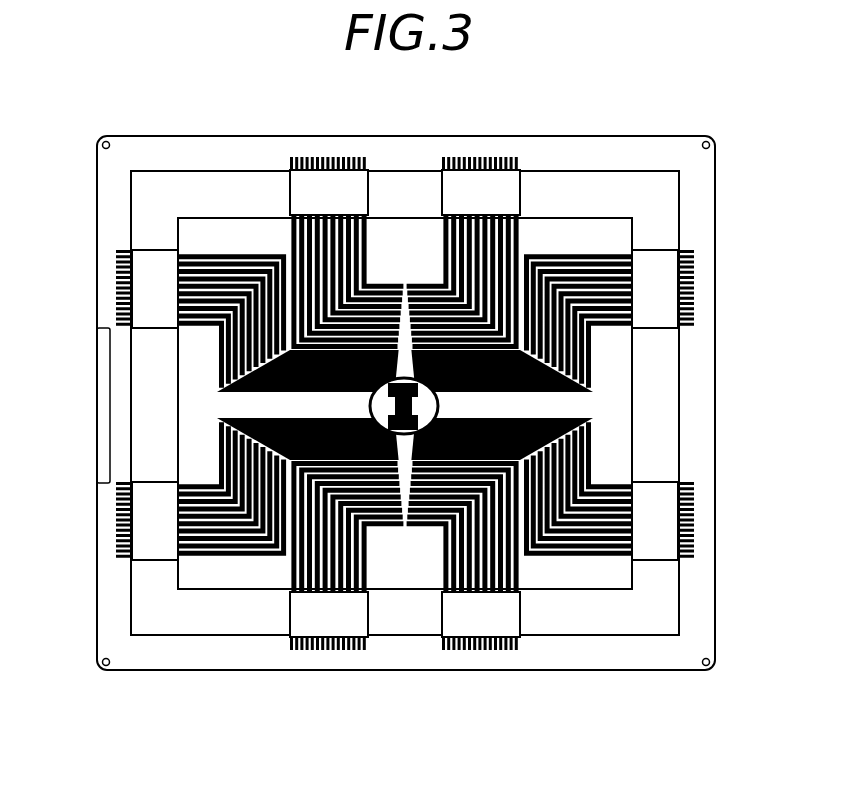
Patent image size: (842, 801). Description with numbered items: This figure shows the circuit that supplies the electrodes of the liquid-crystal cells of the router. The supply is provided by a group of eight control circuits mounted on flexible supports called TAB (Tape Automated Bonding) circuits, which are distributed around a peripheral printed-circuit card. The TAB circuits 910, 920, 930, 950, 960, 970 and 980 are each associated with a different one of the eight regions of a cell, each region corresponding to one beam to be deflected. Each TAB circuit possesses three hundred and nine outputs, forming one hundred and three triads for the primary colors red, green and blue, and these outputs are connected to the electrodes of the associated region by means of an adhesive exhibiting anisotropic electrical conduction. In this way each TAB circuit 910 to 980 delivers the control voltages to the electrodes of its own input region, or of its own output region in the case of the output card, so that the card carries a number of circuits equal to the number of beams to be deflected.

The TAB circuit 910 is at (135, 520).
The TAB circuit 920 is at (138, 284).
The TAB circuit 930 is at (341, 183).
The TAB circuit 950 is at (480, 628).
The TAB circuit 960 is at (485, 183).
The TAB circuit 970 is at (668, 526).
The TAB circuit 980 is at (668, 292).